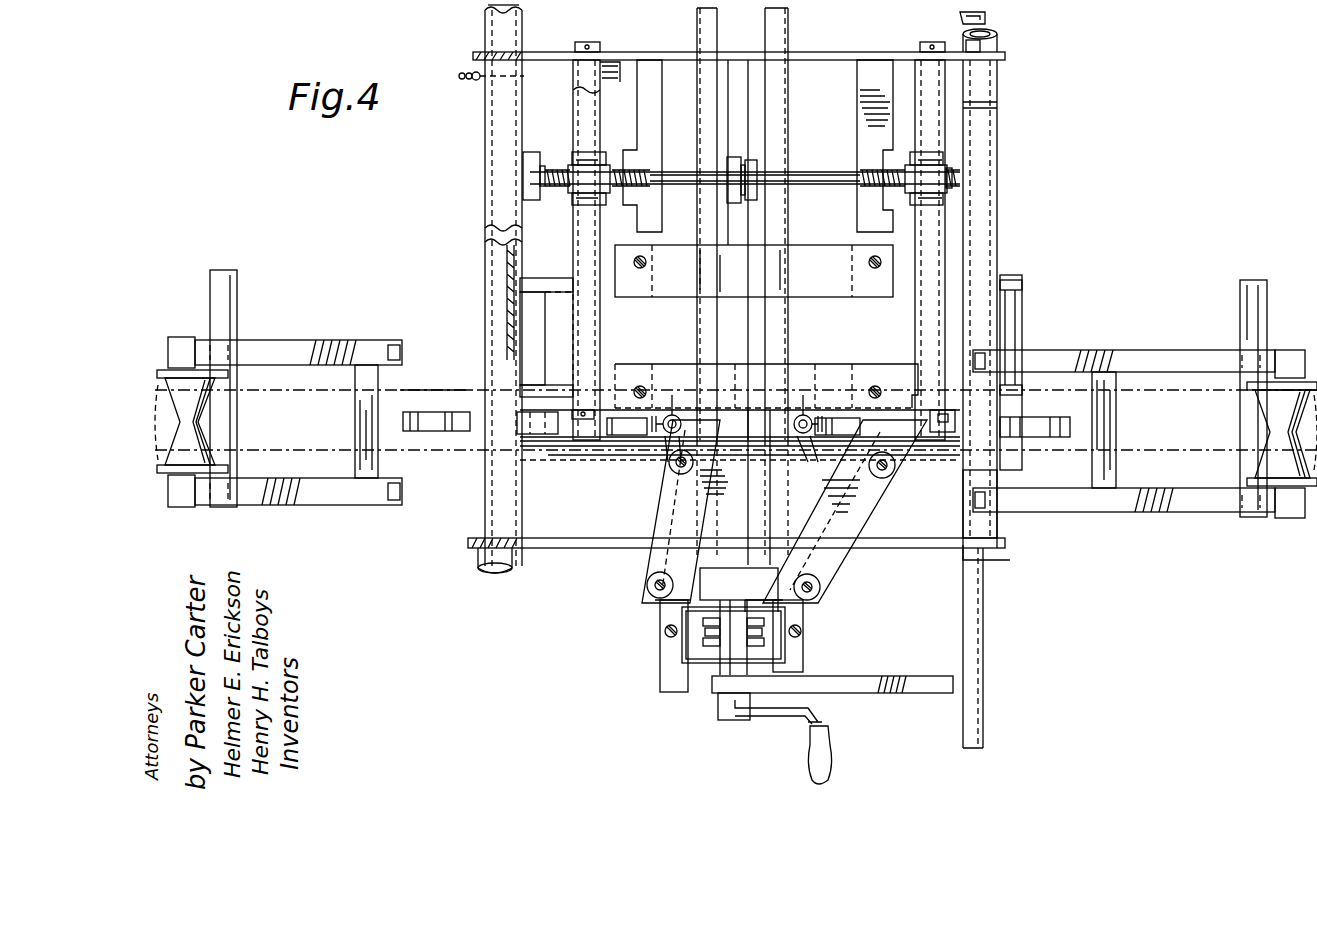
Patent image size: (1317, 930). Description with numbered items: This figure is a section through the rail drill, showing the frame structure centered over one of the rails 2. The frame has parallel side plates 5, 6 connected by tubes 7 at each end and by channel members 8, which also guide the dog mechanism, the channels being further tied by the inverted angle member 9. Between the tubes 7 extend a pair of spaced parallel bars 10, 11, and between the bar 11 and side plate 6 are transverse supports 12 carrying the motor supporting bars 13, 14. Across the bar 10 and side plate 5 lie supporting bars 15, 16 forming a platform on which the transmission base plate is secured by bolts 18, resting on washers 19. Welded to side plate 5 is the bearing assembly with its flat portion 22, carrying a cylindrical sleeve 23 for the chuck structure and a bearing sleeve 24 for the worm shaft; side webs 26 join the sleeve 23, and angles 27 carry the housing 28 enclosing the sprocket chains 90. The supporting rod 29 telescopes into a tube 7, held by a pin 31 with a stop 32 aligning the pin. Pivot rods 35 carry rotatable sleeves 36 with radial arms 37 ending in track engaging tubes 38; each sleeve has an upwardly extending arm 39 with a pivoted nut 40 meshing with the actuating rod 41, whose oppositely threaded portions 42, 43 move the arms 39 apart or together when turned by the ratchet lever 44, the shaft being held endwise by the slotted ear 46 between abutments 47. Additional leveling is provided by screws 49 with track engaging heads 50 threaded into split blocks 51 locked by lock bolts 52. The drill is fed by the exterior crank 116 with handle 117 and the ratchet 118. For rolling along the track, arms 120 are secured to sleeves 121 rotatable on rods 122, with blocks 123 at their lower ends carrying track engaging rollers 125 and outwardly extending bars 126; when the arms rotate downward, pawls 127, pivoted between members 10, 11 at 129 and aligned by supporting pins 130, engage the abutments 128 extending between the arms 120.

The rails 2 is at (432, 389).
The side plate 5 is at (582, 549).
The side plate 6 is at (612, 54).
The tubes 7 is at (495, 571).
The channel members 8 is at (697, 25).
The inverted angle member 9 is at (748, 100).
The bar 10 is at (580, 447).
The bar 11 is at (596, 446).
The transverse supports 12 is at (652, 111).
The motor supporting bar 13 is at (806, 258).
The motor supporting bar 14 is at (814, 374).
The supporting bar 15 is at (668, 500).
The supporting bar 16 is at (870, 493).
The bolts 18 is at (675, 461).
The washers 19 is at (675, 467).
The flat portion 22 is at (769, 529).
The cylindrical sleeve 23 is at (790, 612).
The bearing sleeve 24 is at (700, 588).
The side webs 26 is at (650, 577).
The angles 27 is at (660, 678).
The housing 28 is at (682, 641).
The supporting rod 29 is at (512, 13).
The pin 31 is at (474, 80).
The stop 32 is at (488, 21).
The pivot rods 35 is at (584, 44).
The sleeves 36 is at (950, 126).
The radial arms 37 is at (543, 280).
The track engaging tubes 38 is at (522, 309).
The upwardly extending arm 39 is at (594, 158).
The pivoted nut 40 is at (600, 168).
The actuating rod 41 is at (814, 166).
The screw threaded portion 42 is at (532, 154).
The screw threaded portion 43 is at (962, 180).
The ratchet lever 44 is at (527, 200).
The slotted ear 46 is at (748, 160).
The abutments 47 is at (727, 194).
The screws 49 is at (673, 416).
The track engaging heads 50 is at (669, 413).
The blocks 51 is at (659, 415).
The lock bolts 52 is at (645, 426).
The sprocket chains 90 is at (766, 634).
The crank 116 is at (774, 719).
The handle 117 is at (832, 748).
The ratchet 118 is at (895, 678).
The arms 120 is at (340, 345).
The sleeves 121 is at (980, 527).
The rods 122 is at (985, 47).
The blocks 123 is at (178, 338).
The track engaging rollers 125 is at (200, 408).
The transversely extending bars 126 is at (232, 306).
The pawls 127 is at (438, 433).
The abutments 128 is at (358, 430).
The pawl pivot 129 is at (541, 445).
The supporting pins 130 is at (575, 409).